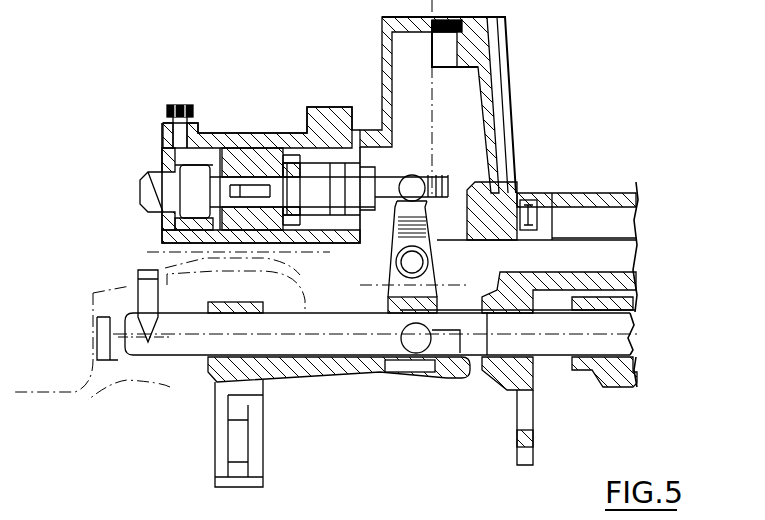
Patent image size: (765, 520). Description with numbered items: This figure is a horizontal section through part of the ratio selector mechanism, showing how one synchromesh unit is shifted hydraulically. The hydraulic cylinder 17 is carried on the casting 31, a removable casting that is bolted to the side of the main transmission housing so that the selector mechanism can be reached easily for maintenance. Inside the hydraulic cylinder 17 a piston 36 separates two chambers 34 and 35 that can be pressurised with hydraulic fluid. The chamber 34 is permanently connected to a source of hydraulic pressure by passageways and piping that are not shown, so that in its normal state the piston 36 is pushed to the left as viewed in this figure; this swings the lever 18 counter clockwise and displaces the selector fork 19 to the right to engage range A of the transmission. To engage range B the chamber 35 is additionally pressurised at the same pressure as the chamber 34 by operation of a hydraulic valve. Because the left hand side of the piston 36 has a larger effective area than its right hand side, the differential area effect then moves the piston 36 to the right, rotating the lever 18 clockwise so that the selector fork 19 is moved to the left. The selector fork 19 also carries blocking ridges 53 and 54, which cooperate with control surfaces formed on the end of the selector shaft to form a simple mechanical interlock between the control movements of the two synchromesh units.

The hydraulic cylinder 17 is at (263, 157).
The lever 18 is at (440, 210).
The selector fork 19 is at (290, 378).
The casting 31 is at (507, 93).
The chamber 34 is at (285, 157).
The chamber 35 is at (232, 158).
The piston 36 is at (220, 251).
The blocking ridge 53 is at (407, 382).
The blocking ridge 54 is at (460, 370).